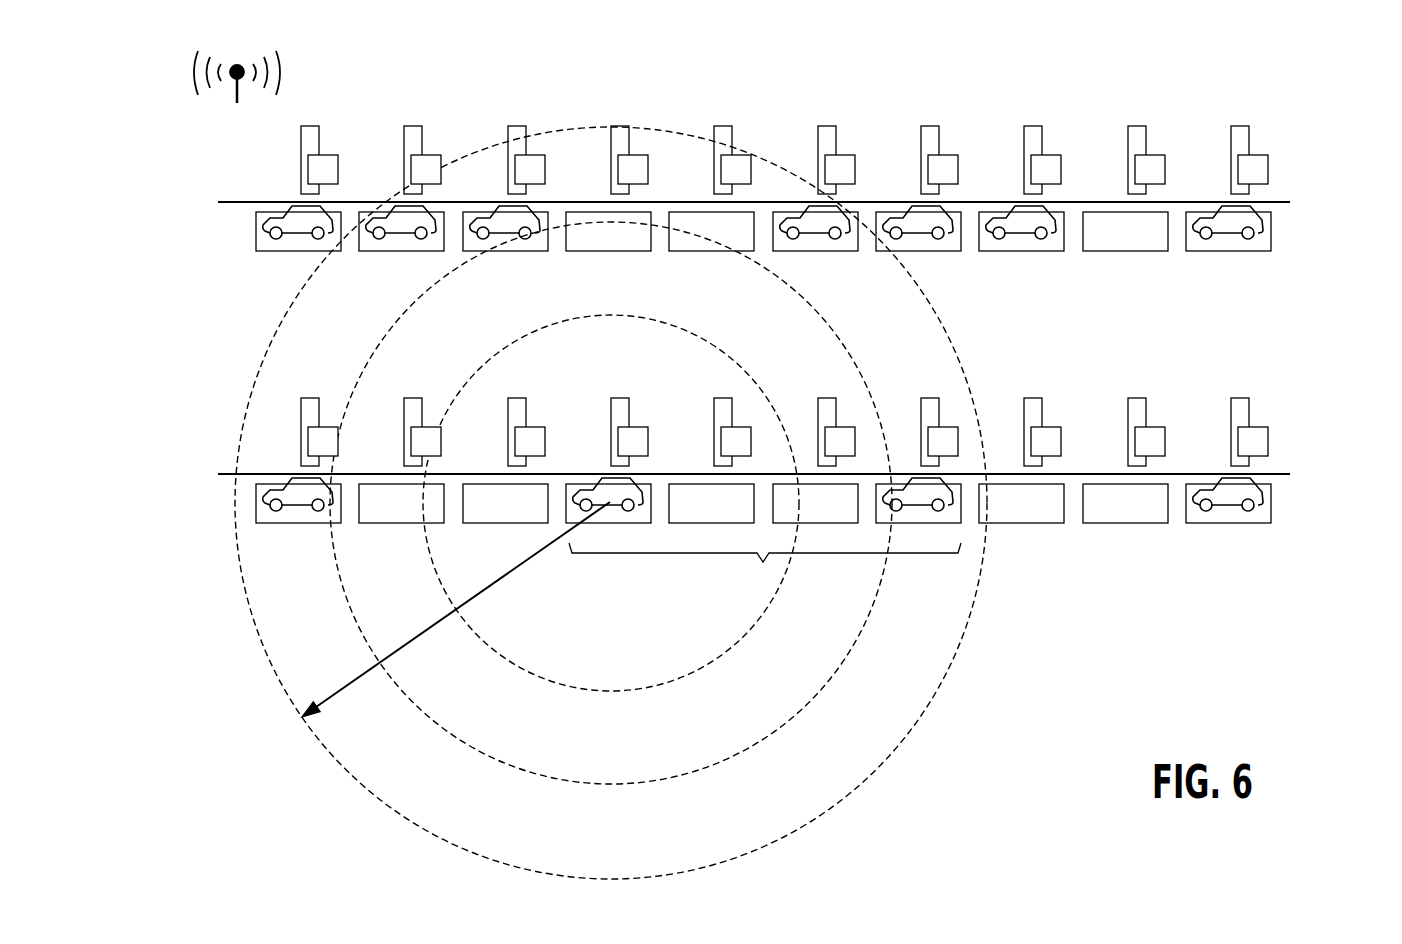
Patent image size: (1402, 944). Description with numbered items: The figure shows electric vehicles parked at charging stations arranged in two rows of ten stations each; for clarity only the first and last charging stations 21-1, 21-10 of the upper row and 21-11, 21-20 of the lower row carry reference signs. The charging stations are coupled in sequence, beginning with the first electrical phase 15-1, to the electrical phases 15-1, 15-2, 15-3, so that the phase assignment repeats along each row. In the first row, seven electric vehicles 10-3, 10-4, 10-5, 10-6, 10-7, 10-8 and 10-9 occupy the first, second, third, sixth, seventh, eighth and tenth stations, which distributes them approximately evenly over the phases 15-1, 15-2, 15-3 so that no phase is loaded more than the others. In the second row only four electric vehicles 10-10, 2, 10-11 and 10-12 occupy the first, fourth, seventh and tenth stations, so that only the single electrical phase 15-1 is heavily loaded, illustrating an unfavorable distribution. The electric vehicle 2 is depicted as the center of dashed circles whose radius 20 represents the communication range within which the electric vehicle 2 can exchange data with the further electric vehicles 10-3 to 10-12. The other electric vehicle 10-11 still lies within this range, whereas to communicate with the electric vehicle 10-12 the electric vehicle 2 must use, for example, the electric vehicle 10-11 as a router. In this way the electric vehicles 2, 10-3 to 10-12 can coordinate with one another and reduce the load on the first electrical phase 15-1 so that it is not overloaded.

The electric vehicle 2 is at (603, 488).
The electric vehicle 10-3 is at (267, 225).
The electric vehicle 10-4 is at (403, 237).
The electric vehicle 10-5 is at (503, 237).
The electric vehicle 10-6 is at (817, 227).
The electric vehicle 10-7 is at (923, 227).
The electric vehicle 10-8 is at (1023, 227).
The electric vehicle 10-9 is at (1257, 223).
The electric vehicle 10-10 is at (267, 497).
The electric vehicle 10-11 is at (947, 495).
The electric vehicle 10-12 is at (1257, 495).
The first electrical phase 15-1 is at (809, 277).
The second electrical phase 15-2 is at (757, 277).
The third electrical phase 15-3 is at (861, 277).
The radius 20 is at (427, 628).
The charging station 21-1 is at (271, 253).
The charging station 21-10 is at (1205, 253).
The charging station 21-11 is at (277, 525).
The charging station 21-20 is at (1205, 525).